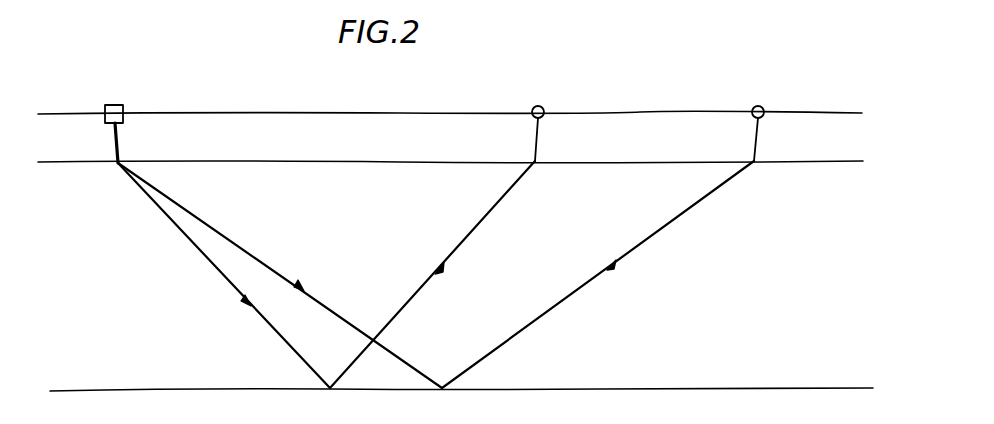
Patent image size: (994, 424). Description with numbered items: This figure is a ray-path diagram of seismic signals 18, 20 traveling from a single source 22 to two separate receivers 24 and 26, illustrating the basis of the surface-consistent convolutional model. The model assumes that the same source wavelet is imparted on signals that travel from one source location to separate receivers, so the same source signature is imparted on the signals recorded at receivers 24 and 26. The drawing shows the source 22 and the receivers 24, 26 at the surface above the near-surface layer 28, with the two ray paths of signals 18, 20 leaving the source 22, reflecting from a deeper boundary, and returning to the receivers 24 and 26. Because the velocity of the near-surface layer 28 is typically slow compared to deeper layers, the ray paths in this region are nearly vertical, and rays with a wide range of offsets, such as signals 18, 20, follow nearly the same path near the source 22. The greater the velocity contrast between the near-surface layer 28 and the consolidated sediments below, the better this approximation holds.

The seismic signal 18 is at (213, 268).
The seismic signal 20 is at (240, 245).
The source 22 is at (102, 102).
The receiver 24 is at (550, 104).
The receiver 26 is at (768, 104).
The near-surface layer 28 is at (237, 126).